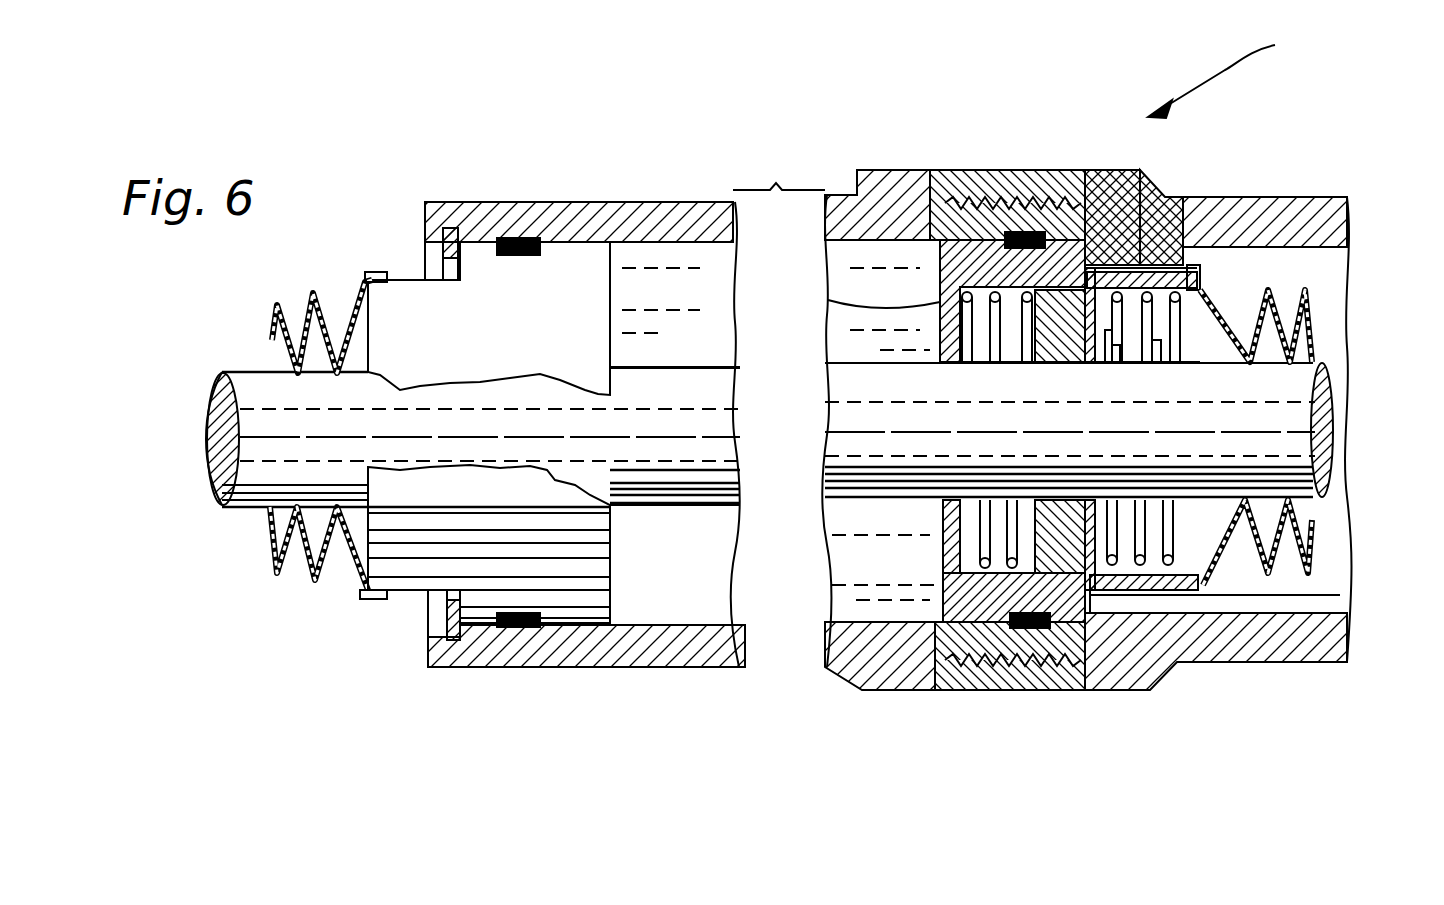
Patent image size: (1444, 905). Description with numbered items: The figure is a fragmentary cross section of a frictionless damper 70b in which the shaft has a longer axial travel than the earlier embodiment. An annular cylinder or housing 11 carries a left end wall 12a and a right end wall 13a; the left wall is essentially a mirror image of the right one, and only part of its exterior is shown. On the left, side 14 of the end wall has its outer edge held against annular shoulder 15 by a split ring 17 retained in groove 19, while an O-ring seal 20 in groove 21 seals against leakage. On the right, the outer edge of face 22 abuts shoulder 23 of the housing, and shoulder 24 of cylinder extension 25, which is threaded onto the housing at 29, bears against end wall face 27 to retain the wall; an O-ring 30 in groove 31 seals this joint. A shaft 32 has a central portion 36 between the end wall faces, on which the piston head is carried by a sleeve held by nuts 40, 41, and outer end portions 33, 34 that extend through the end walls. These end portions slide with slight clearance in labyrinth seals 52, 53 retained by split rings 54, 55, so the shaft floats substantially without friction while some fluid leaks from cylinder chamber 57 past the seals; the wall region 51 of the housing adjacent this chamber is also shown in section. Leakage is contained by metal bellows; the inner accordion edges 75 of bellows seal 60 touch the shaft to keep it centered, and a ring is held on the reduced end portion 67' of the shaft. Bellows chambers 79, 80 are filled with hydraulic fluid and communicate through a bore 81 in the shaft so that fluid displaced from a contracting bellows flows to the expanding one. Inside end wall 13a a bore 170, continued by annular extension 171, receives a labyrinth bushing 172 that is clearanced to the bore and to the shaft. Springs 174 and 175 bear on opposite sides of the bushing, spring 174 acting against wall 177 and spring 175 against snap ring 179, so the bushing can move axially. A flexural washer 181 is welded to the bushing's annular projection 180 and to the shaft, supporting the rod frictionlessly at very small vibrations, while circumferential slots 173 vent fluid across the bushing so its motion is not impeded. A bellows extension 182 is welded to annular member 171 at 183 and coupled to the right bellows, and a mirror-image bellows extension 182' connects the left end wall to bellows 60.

The mechanical seal assembly 70b is at (1238, 77).
The cylinder 11 is at (883, 170).
The end wall 12a is at (545, 238).
The end wall 13a is at (991, 230).
The side 14 is at (700, 202).
The annular shoulder 15 is at (565, 270).
The split ring 17 is at (450, 228).
The groove 19 is at (430, 651).
The O-ring seal 20 is at (503, 638).
The groove 21 is at (528, 635).
The face 22 is at (940, 295).
The shoulder 23 is at (950, 690).
The shoulder 24 is at (1135, 200).
The cylinder extension 25 is at (1348, 215).
The end wall face 27 is at (1190, 215).
The threaded connection 29 is at (1045, 170).
The O-ring 30 is at (1014, 690).
The groove 31 is at (1085, 660).
The shaft 32 is at (825, 470).
The outer end portion 33 is at (210, 398).
The outer end portion 34 is at (1357, 487).
The central portion 36 is at (900, 350).
The nut 40 is at (675, 541).
The nut 41 is at (886, 567).
The housing wall 51 is at (686, 620).
The labyrinth seal 52 is at (517, 544).
The labyrinth seal 53 is at (945, 600).
The split ring 54 is at (675, 317).
The split ring 55 is at (945, 515).
The cylinder chamber 57 is at (728, 610).
The bellows seal 60 is at (305, 575).
The reduced end portion 67' is at (1260, 560).
The inner accordion edges 75 is at (458, 321).
The bellows chamber 79 is at (280, 543).
The bellows chamber 80 is at (1357, 530).
The bore 81 is at (210, 430).
The bore 170 is at (828, 302).
The annular extension 171 is at (1250, 200).
The labyrinth bushing 172 is at (1020, 345).
The slots 173 is at (1085, 335).
The spring 174 is at (960, 340).
The spring 175 is at (1160, 340).
The wall 177 is at (972, 500).
The snap ring 179 is at (1200, 290).
The annular projection 180 is at (1115, 340).
The flexural washer 181 is at (1140, 505).
The bellows extension 182 is at (1257, 551).
The bellows extension 182' is at (321, 305).
The weld 183 is at (1300, 200).